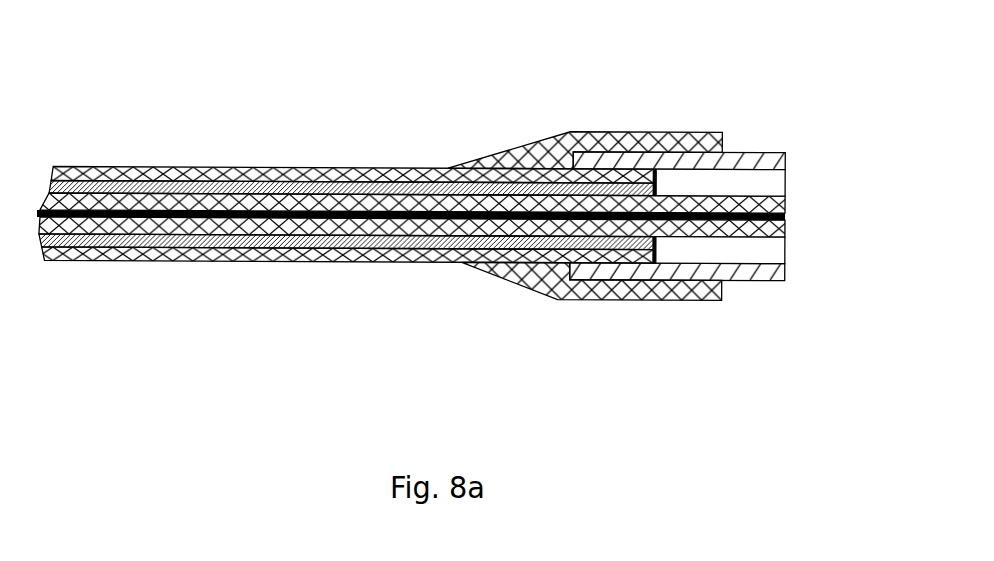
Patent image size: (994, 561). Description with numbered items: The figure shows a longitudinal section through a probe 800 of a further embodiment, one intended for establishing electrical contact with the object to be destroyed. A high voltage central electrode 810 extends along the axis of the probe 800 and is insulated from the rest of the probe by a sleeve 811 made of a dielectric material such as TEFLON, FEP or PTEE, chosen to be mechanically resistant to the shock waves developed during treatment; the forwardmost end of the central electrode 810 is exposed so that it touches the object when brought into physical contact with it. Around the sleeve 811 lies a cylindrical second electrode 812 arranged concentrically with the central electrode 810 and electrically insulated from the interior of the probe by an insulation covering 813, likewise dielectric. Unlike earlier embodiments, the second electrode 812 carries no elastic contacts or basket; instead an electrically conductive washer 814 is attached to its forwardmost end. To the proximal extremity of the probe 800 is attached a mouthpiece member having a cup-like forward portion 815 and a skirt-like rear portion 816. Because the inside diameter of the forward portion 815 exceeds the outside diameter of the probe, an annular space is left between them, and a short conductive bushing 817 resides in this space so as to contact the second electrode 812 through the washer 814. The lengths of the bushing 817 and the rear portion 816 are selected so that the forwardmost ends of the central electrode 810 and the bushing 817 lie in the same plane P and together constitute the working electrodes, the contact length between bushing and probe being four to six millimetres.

The probe 800 is at (411, 169).
The high voltage central electrode 810 is at (411, 215).
The sleeve 811 is at (347, 214).
The second electrode 812 is at (349, 214).
The insulation covering 813 is at (592, 281).
The washer 814 is at (654, 216).
The cup-like forward portion 815 is at (679, 161).
The skirt-like rear portion 816 is at (585, 150).
The bushing 817 is at (677, 272).
The plane P is at (720, 216).